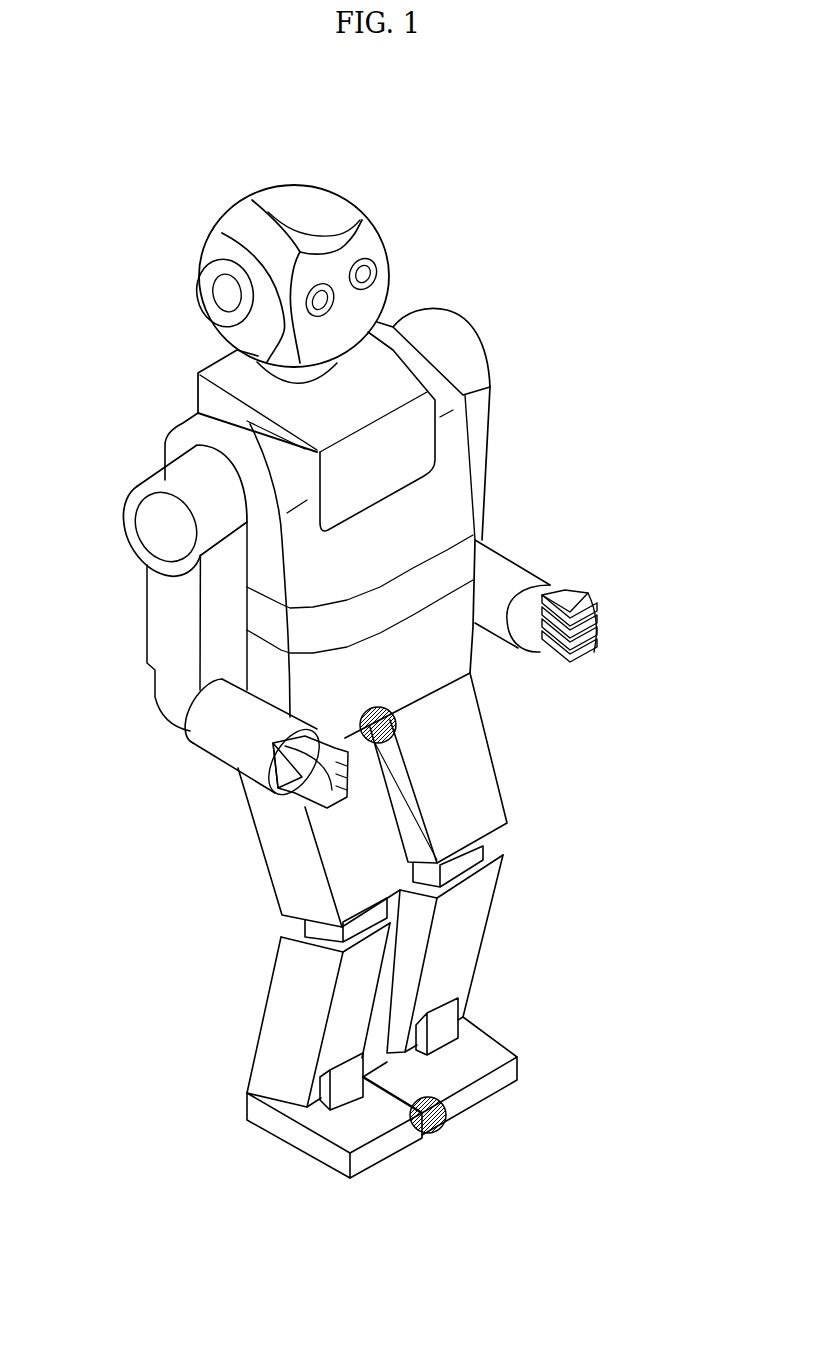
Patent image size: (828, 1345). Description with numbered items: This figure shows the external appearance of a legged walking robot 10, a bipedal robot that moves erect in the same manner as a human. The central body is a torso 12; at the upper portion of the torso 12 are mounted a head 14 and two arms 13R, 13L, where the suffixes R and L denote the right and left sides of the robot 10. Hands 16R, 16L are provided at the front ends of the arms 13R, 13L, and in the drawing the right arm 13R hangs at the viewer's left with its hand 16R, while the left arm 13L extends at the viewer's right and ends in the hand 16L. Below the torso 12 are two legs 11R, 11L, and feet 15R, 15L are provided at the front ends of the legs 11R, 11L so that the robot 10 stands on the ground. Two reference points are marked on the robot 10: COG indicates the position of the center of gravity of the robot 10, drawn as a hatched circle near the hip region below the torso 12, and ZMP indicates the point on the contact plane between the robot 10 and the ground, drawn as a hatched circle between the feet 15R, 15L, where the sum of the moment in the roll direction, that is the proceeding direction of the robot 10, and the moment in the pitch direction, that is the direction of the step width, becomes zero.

The robot 10 is at (542, 178).
The head 14 is at (388, 258).
The torso 12 is at (457, 473).
The left arm 13L is at (503, 565).
The right arm 13R is at (170, 663).
The left hand 16L is at (593, 625).
The right hand 16R is at (283, 795).
The left leg 11L is at (498, 900).
The right leg 11R is at (287, 970).
The left foot 15L is at (508, 1067).
The right foot 15R is at (300, 1133).
The center of gravity COG is at (397, 723).
The zero moment point ZMP is at (437, 1132).